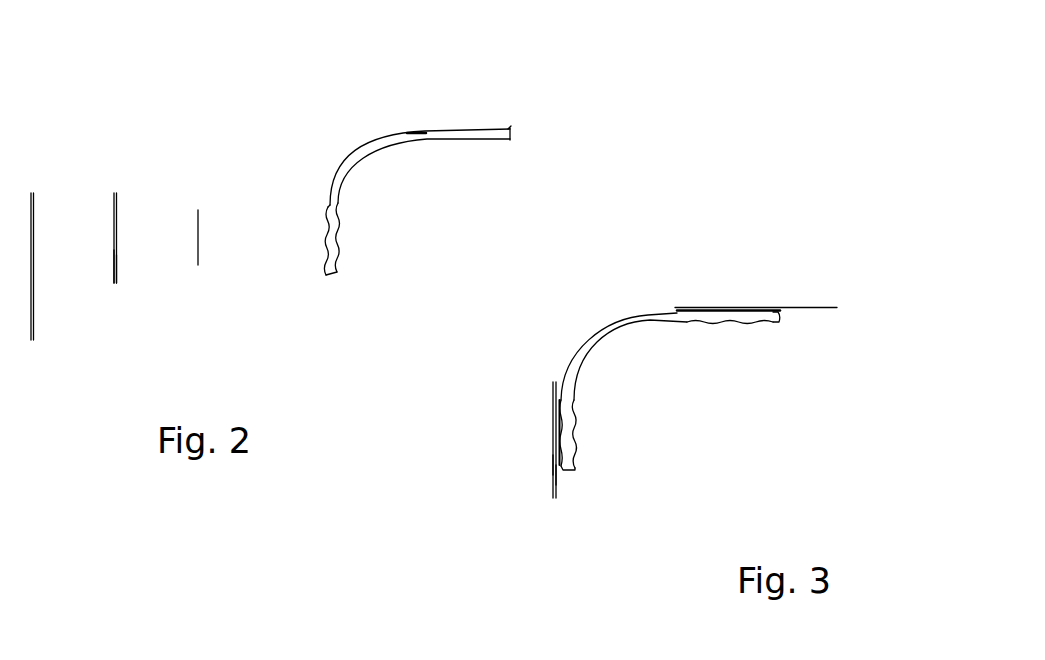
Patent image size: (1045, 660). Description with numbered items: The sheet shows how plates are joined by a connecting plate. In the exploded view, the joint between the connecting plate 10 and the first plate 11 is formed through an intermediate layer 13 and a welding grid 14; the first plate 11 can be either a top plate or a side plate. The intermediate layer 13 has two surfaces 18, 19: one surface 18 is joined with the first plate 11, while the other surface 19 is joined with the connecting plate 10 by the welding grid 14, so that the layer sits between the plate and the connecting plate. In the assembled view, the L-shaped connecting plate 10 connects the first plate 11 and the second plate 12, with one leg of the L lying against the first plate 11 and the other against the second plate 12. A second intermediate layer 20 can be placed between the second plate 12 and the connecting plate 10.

In FIG. 2, the connecting plate 10 is at (407, 132).
In FIG. 3, the connecting plate 10 is at (603, 333).
In FIG. 2, the first plate 11 is at (32, 240).
In FIG. 3, the first plate 11 is at (557, 464).
In FIG. 3, the second plate 12 is at (810, 310).
In FIG. 2, the intermediate layer 13 is at (114, 235).
In FIG. 3, the intermediate layer 13 is at (558, 475).
In FIG. 2, the welding grid 14 is at (198, 239).
In FIG. 3, the welding grid 14 is at (560, 423).
In FIG. 2, the surface 18 is at (112, 250).
In FIG. 2, the surface 19 is at (115, 265).
In FIG. 3, the second intermediate layer 20 is at (778, 312).